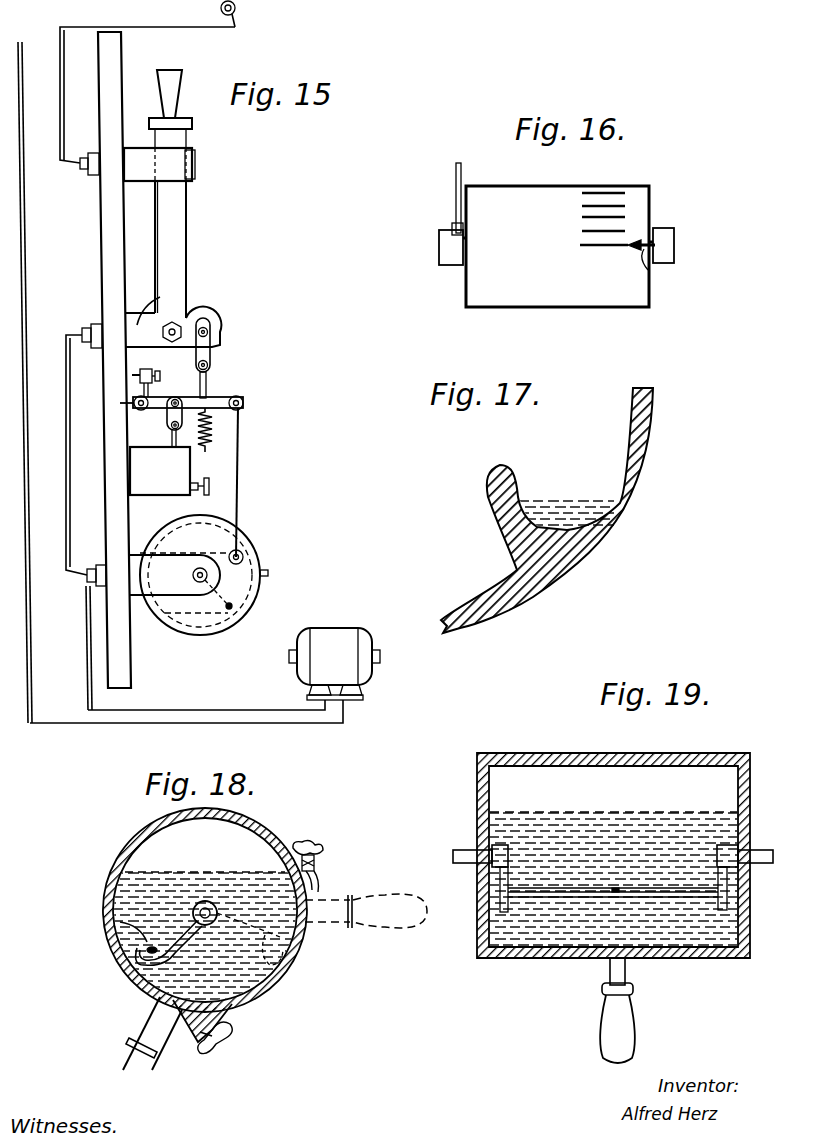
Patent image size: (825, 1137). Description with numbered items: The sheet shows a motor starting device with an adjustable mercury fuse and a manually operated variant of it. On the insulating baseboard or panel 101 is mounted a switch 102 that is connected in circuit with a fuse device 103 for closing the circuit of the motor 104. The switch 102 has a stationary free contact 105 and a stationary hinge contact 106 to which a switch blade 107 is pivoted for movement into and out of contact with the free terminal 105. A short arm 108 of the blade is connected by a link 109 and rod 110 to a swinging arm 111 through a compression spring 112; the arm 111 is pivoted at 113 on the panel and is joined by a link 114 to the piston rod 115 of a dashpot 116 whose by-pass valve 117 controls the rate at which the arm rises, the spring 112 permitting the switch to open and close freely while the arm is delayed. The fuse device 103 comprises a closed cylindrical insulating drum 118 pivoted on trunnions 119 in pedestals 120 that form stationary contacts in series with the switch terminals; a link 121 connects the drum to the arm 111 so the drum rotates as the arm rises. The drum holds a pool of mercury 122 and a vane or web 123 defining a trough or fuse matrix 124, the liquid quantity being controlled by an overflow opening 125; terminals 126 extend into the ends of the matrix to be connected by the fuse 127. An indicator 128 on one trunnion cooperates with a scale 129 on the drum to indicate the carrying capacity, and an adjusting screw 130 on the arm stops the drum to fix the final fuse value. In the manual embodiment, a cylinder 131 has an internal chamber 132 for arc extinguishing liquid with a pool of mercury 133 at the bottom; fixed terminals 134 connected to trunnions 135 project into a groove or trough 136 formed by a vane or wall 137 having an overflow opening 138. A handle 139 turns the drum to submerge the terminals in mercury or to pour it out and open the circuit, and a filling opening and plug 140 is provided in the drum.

In FIG. 15, the insulating baseboard or panel 101 is at (118, 72).
In FIG. 15, the switch 102 is at (205, 240).
In FIG. 15, the fuse device 103 is at (258, 536).
In FIG. 15, the motor 104 is at (330, 628).
In FIG. 15, the stationary free contact 105 is at (145, 162).
In FIG. 15, the stationary hinge contact 106 is at (160, 297).
In FIG. 15, the switch blade 107 is at (175, 228).
In FIG. 15, the short arm 108 is at (213, 325).
In FIG. 15, the link 109 is at (212, 352).
In FIG. 15, the rod 110 is at (208, 381).
In FIG. 15, the swinging arm 111 is at (222, 397).
In FIG. 15, the compression spring 112 is at (214, 430).
In FIG. 15, the pivot 113 is at (120, 403).
In FIG. 15, the link 114 is at (175, 398).
In FIG. 15, the piston rod 115 is at (172, 440).
In FIG. 15, the dashpot 116 is at (160, 484).
In FIG. 15, the controlling valve 117 is at (201, 482).
In FIG. 15, the fuse drum or container 118 is at (245, 560).
In FIG. 17, the fuse drum or container 118 is at (652, 433).
In FIG. 16, the trunnions 119 is at (462, 266).
In FIG. 15, the pedestals 120 is at (162, 580).
In FIG. 16, the pedestals 120 is at (440, 252).
In FIG. 15, the link 121 is at (241, 491).
In FIG. 16, the link 121 is at (461, 180).
In FIG. 15, the pool of mercury 122 is at (205, 613).
In FIG. 17, the vane or web 123 is at (498, 465).
In FIG. 17, the trough or fuse matrix 124 is at (553, 490).
In FIG. 17, the overflow opening 125 is at (497, 508).
In FIG. 15, the terminals 126 is at (165, 594).
In FIG. 17, the fuse 127 is at (628, 510).
In FIG. 15, the indicator 128 is at (268, 573).
In FIG. 16, the indicator 128 is at (646, 257).
In FIG. 16, the scale 129 is at (605, 207).
In FIG. 15, the adjusting screw 130 is at (152, 374).
In FIG. 18, the cylinder or drum 131 is at (140, 838).
In FIG. 19, the cylinder or drum 131 is at (575, 738).
In FIG. 18, the internal chamber 132 is at (125, 873).
In FIG. 19, the internal chamber 132 is at (730, 786).
In FIG. 18, the pool of mercury 133 is at (266, 994).
In FIG. 18, the terminals 134 is at (135, 978).
In FIG. 19, the terminals 134 is at (492, 905).
In FIG. 19, the trunnions 135 is at (770, 841).
In FIG. 18, the groove or trough 136 is at (135, 960).
In FIG. 18, the vane or wall 137 is at (125, 945).
In FIG. 18, the overflow opening 138 is at (125, 920).
In FIG. 19, the overflow opening 138 is at (615, 892).
In FIG. 18, the handle 139 is at (126, 1070).
In FIG. 18, the filling opening and plug 140 is at (315, 860).